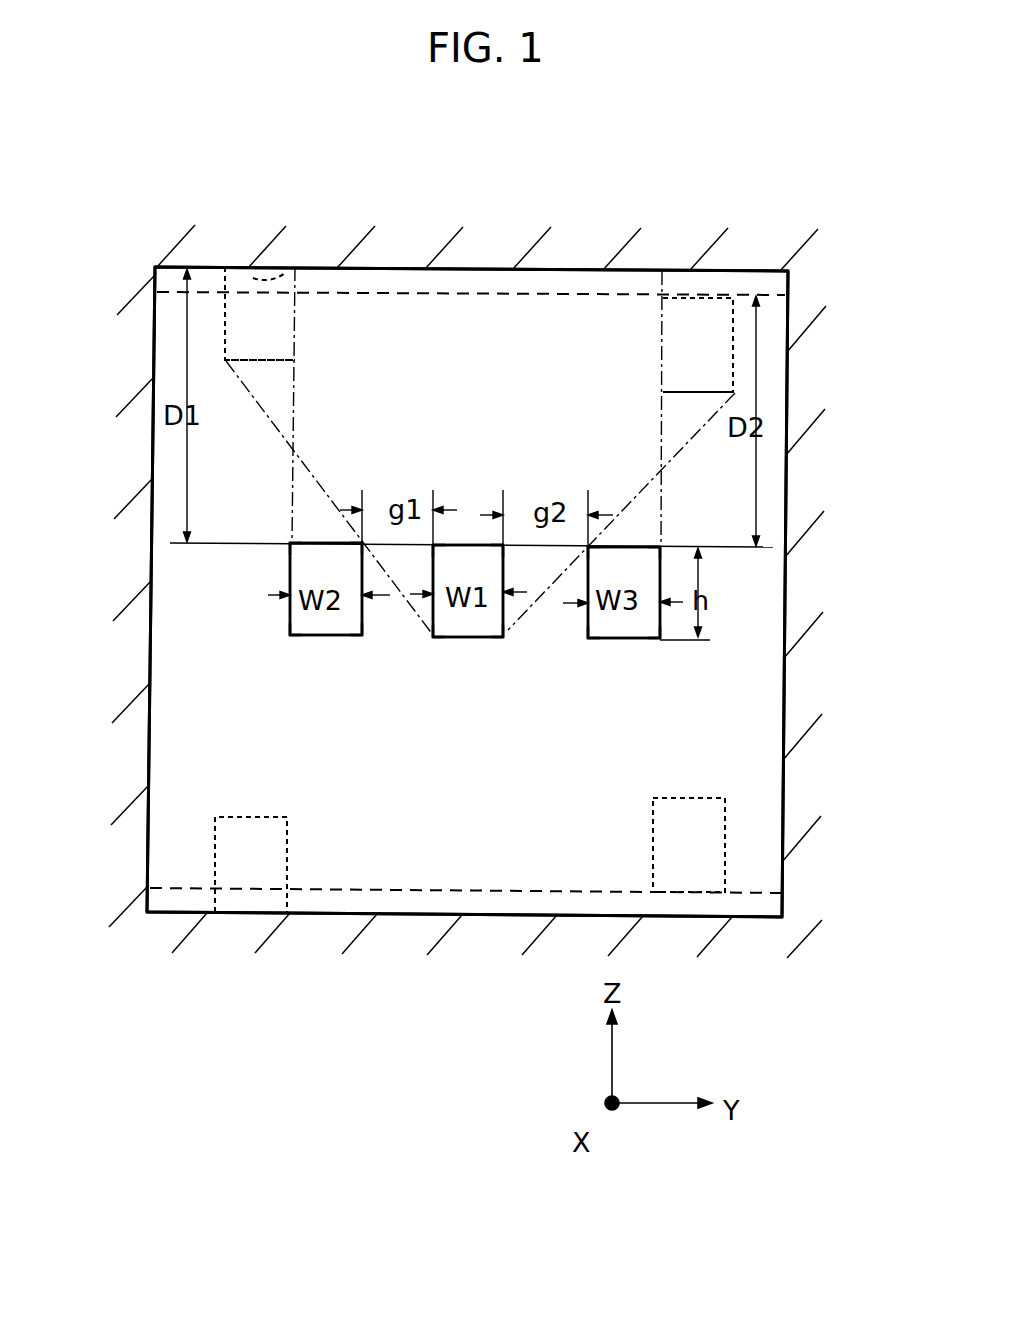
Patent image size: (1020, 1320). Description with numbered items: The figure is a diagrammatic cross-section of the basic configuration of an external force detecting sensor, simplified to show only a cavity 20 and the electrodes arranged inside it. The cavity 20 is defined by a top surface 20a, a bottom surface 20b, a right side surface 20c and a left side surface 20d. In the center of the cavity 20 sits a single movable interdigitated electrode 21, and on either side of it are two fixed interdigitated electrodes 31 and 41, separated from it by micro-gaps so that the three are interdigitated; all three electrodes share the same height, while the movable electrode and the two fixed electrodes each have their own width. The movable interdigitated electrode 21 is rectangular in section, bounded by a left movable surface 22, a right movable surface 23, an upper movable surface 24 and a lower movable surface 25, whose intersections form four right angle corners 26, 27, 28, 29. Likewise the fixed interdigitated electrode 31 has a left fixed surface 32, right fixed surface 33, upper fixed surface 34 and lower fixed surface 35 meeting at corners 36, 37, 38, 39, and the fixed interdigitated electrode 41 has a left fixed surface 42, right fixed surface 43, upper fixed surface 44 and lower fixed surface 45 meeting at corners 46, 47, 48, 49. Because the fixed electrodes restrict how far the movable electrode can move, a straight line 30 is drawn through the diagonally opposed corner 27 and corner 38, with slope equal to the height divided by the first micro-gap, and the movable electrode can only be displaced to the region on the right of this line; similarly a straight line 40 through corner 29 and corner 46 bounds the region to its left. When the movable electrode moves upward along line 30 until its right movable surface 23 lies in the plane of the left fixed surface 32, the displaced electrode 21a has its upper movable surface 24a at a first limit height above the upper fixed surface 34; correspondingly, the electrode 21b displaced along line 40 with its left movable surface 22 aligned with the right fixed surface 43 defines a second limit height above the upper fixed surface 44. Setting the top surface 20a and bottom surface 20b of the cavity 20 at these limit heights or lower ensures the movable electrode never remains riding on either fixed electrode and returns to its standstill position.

The cavity 20 is at (536, 876).
The top surface 20a is at (441, 272).
The bottom surface 20b is at (392, 913).
The right side surface 20c is at (148, 742).
The left side surface 20d is at (782, 741).
The movable interdigitated electrode 21 is at (452, 553).
The movable interdigitated electrode displaced upward in left region 21a is at (273, 358).
The movable interdigitated electrode displaced upward in right region 21b is at (689, 387).
The left movable surface 22 is at (430, 615).
The right movable surface 23 is at (504, 617).
The upper movable surface 24 is at (490, 544).
The upper movable surface of displaced movable electrode 24a is at (293, 262).
The lower movable surface 25 is at (466, 637).
The right angle corner 26 is at (433, 544).
The right angle corner 27 is at (433, 637).
The right angle corner 28 is at (505, 545).
The right angle corner 29 is at (503, 637).
The straight line 30 is at (227, 362).
The fixed interdigitated electrode 31 is at (310, 568).
The left fixed surface 32 is at (290, 619).
The right fixed surface 33 is at (364, 622).
The upper fixed surface 34 is at (320, 542).
The lower fixed surface 35 is at (317, 635).
The right angle corner 36 is at (290, 542).
The right angle corner 37 is at (290, 635).
The right angle corner 38 is at (362, 542).
The right angle corner 39 is at (363, 635).
The straight line 40 is at (703, 433).
The fixed interdigitated electrode 41 is at (635, 630).
The left fixed surface 42 is at (588, 583).
The right fixed surface 43 is at (661, 567).
The upper fixed surface 44 is at (631, 547).
The lower fixed surface 45 is at (641, 638).
The right angle corner 46 is at (588, 546).
The right angle corner 47 is at (588, 638).
The right angle corner 48 is at (660, 547).
The right angle corner 49 is at (661, 639).